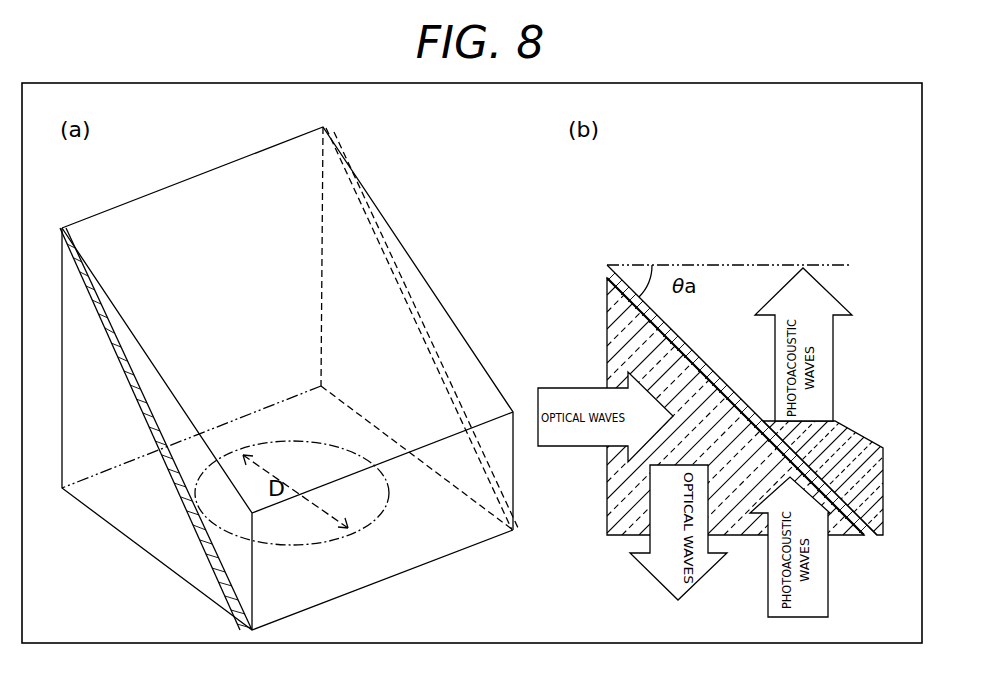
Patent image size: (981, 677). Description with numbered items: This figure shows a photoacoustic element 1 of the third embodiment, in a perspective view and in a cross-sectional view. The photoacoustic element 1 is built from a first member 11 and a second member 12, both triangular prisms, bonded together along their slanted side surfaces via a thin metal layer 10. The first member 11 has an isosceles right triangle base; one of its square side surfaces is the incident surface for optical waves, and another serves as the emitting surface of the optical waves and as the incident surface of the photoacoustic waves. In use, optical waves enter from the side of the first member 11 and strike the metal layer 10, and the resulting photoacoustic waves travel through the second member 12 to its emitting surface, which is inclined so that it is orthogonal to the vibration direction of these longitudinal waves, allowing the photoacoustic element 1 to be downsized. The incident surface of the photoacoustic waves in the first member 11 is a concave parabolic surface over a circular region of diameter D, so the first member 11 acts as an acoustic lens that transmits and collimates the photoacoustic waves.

The photoacoustic element 1 is at (500, 180).
The metal layer 10 is at (149, 427).
The first member 11 is at (135, 548).
The second member 12 is at (417, 262).